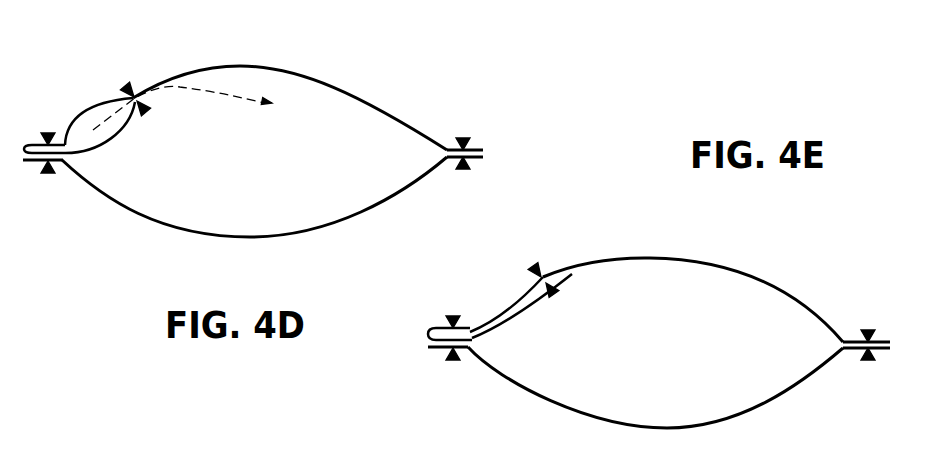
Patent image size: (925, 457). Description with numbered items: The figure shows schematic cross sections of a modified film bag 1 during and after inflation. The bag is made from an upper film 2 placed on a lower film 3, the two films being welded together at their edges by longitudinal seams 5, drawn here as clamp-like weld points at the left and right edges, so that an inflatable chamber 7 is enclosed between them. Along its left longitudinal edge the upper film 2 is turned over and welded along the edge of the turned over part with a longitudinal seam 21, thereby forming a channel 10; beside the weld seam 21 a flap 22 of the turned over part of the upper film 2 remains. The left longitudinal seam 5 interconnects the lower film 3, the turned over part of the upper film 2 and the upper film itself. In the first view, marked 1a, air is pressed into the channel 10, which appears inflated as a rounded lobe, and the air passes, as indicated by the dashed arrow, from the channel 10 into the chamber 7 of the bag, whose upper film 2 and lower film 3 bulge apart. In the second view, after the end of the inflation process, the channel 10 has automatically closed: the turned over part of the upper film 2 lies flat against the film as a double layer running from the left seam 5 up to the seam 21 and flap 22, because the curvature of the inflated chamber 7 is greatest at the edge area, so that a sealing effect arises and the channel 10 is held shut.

In FIG. 4E, the film bag 1 is at (797, 250).
In FIG. 4D, the bellows variant 1a is at (69, 260).
In FIG. 4D, the upper film 2 is at (220, 67).
In FIG. 4E, the upper film 2 is at (597, 262).
In FIG. 4D, the lower film 3 is at (140, 215).
In FIG. 4E, the lower film 3 is at (510, 382).
In FIG. 4D, the longitudinal seam 5 is at (48, 134).
In FIG. 4E, the longitudinal seam 5 is at (453, 317).
In FIG. 4D, the chamber 7 is at (120, 167).
In FIG. 4E, the chamber 7 is at (778, 373).
In FIG. 4D, the channel 10 is at (87, 117).
In FIG. 4E, the channel 10 is at (503, 310).
In FIG. 4D, the longitudinal seam 21 is at (132, 93).
In FIG. 4E, the longitudinal seam 21 is at (538, 274).
In FIG. 4E, the flap 22 is at (557, 280).